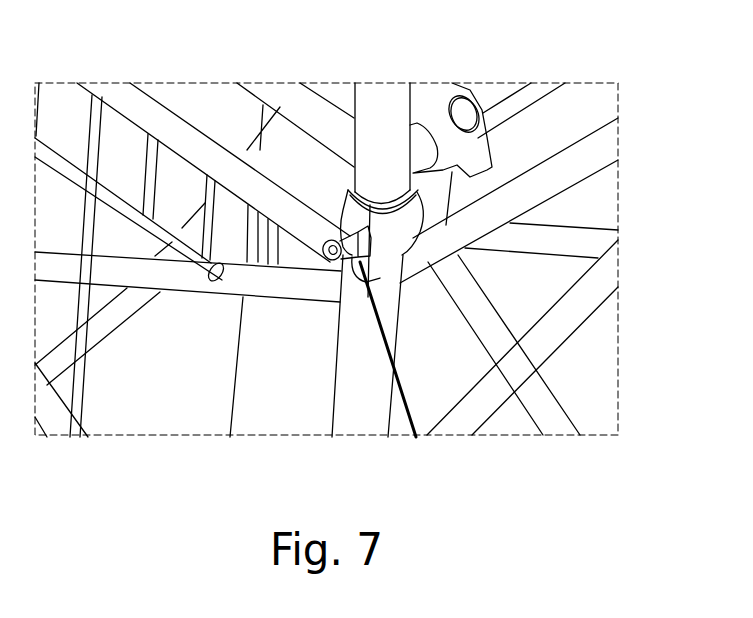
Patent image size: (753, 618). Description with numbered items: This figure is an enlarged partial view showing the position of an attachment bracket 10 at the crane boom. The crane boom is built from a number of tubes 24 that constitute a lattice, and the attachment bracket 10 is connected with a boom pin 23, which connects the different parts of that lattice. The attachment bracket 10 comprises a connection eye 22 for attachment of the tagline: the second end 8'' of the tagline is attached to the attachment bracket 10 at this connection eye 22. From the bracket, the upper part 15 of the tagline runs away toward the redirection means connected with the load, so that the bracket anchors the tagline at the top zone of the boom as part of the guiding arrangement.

The second end of the tagline 8'' is at (535, 259).
The attachment bracket 10 is at (331, 212).
The upper part of the tagline 15 is at (372, 284).
The connection eye 22 is at (352, 270).
The boom pin 23 is at (334, 258).
The tubes 24 is at (367, 108).